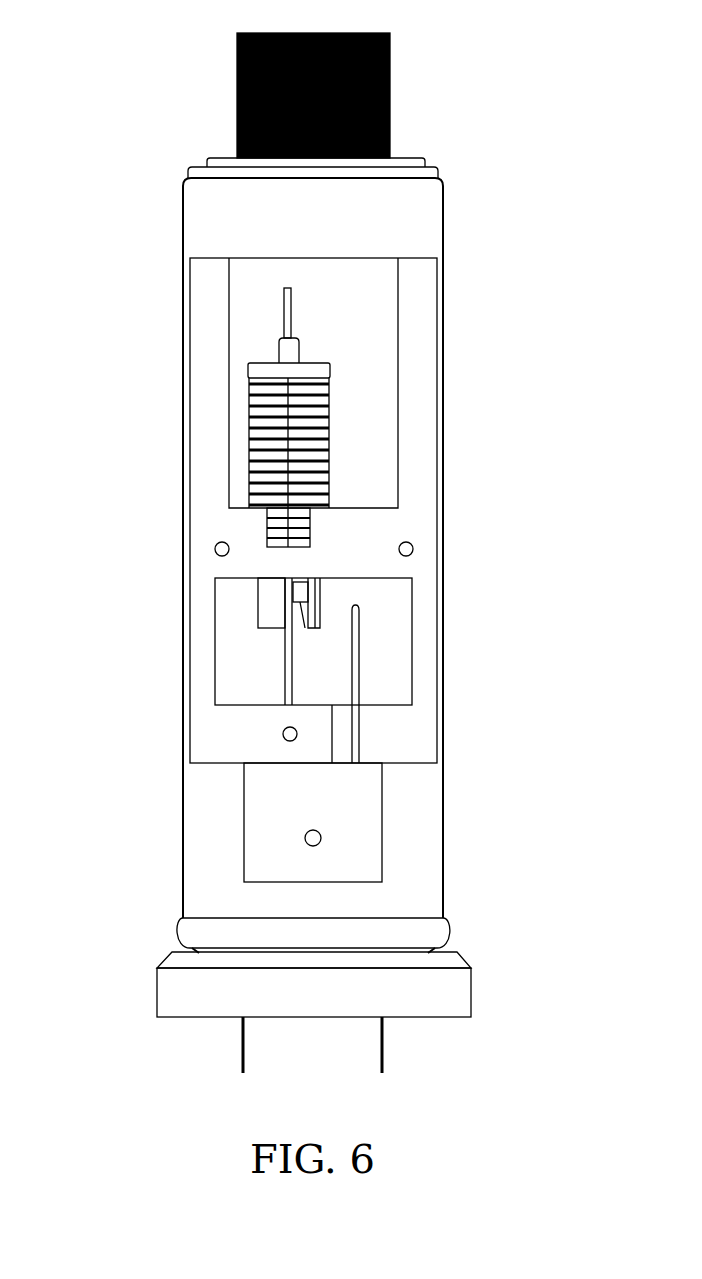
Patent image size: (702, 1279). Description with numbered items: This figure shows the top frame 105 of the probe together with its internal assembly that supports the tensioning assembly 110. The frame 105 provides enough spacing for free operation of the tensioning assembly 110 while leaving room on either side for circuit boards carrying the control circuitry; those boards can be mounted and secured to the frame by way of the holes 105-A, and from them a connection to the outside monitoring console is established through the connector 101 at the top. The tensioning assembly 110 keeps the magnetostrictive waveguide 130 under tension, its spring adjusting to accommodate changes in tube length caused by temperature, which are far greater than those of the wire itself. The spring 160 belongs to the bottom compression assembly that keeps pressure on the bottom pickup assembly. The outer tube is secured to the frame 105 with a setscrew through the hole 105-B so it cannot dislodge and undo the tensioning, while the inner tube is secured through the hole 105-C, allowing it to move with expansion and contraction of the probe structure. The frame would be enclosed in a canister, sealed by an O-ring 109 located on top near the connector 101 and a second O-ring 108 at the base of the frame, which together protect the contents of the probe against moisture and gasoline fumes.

The connector 101 is at (388, 98).
The O-ring 109 is at (212, 166).
The top frame 105 is at (430, 357).
The tensioning assembly 110 is at (257, 448).
The holes 105-A is at (215, 550).
The waveguide 130 is at (288, 667).
The spring 160 is at (358, 673).
The hole 105-C is at (283, 743).
The hole 105-B is at (321, 836).
The O-ring 108 is at (430, 933).